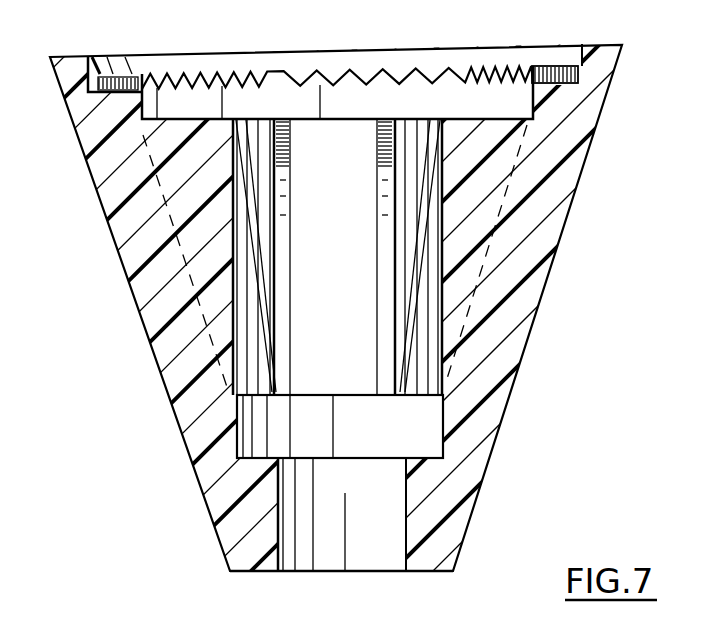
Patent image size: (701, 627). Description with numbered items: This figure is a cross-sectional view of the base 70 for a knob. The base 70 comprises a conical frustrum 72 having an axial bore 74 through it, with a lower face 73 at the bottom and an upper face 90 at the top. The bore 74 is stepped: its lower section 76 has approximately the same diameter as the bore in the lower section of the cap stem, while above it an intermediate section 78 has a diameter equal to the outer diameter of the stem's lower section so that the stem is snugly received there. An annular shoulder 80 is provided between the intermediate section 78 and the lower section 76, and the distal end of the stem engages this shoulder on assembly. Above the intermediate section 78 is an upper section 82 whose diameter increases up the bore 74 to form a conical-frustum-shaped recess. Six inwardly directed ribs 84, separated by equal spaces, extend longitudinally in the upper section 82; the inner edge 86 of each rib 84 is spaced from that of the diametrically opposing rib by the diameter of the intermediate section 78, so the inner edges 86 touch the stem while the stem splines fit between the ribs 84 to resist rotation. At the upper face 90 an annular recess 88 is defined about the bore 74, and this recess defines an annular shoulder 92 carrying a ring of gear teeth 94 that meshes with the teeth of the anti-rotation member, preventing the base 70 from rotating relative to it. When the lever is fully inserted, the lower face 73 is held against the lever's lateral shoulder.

The base 70 is at (126, 322).
The conical frustrum 72 is at (116, 190).
The lower face 73 is at (431, 571).
The axial bore 74 is at (383, 558).
The lower section 76 is at (306, 553).
The intermediate section 78 is at (254, 432).
The annular shoulder 80 is at (418, 459).
The upper section 82 is at (357, 118).
The ribs 84 is at (168, 142).
The inner edge 86 is at (384, 177).
The annular recess 88 is at (118, 60).
The upper face 90 is at (602, 44).
The annular shoulder 92 is at (558, 87).
The ring of gear teeth 94 is at (455, 80).